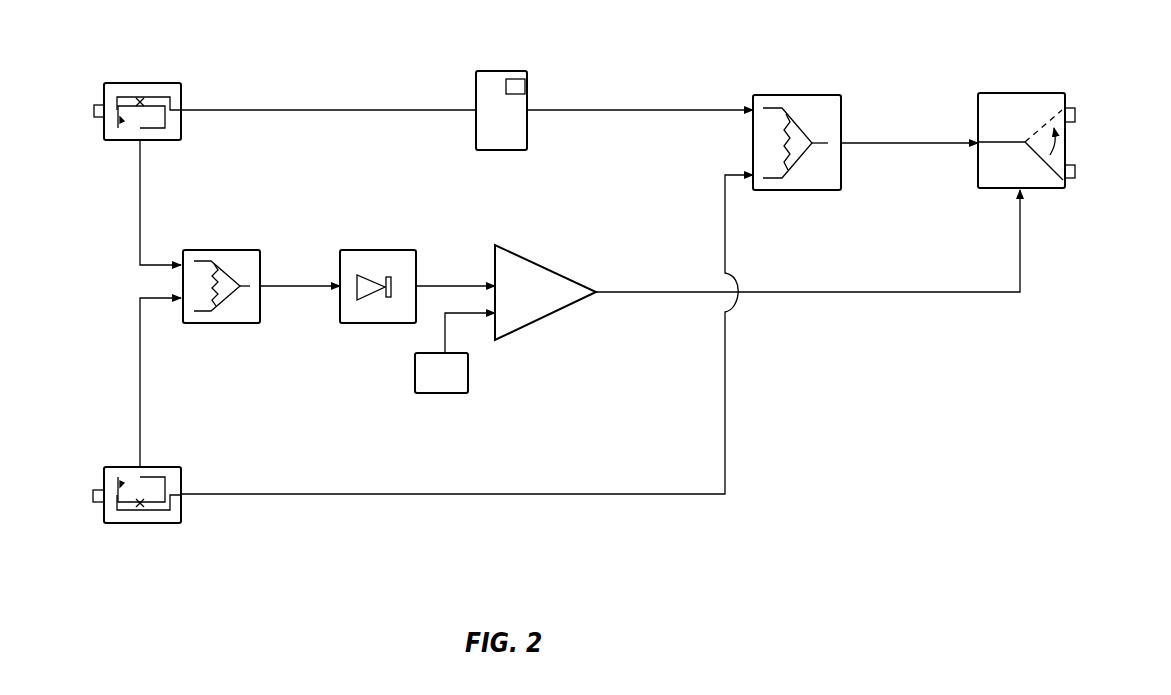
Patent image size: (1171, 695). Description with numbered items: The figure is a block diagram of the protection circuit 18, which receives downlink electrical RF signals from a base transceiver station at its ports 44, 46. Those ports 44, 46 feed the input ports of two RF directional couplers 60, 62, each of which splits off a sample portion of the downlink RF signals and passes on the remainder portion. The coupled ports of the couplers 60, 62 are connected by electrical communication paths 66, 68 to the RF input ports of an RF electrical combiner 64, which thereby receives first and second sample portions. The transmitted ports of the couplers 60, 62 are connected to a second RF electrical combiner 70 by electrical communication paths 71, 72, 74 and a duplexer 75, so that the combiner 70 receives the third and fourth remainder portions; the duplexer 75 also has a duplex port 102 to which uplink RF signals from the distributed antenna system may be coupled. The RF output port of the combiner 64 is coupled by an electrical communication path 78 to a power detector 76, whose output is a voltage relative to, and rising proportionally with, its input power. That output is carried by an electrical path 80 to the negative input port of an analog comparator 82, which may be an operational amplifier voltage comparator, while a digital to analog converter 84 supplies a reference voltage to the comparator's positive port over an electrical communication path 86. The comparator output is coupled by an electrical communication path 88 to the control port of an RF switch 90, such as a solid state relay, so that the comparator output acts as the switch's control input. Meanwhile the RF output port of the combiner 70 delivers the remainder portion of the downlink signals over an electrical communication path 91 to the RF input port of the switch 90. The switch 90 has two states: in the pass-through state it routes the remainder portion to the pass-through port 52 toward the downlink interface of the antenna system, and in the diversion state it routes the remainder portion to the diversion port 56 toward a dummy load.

The protection circuit 18 is at (818, 516).
The port 44 is at (98, 107).
The port 46 is at (97, 502).
The pass-through port 52 is at (1072, 110).
The diversion port 56 is at (1078, 172).
The RF directional coupler 60 is at (172, 83).
The RF directional coupler 62 is at (178, 520).
The RF electrical combiner 64 is at (250, 250).
The electrical communication path 66 is at (140, 237).
The electrical communication path 68 is at (140, 375).
The RF electrical combiner 70 is at (822, 95).
The electrical communication path 71 is at (332, 109).
The electrical communication path 72 is at (640, 109).
The electrical communication path 74 is at (472, 494).
The duplexer 75 is at (498, 71).
The power detector 76 is at (400, 250).
The electrical communication path 78 is at (285, 300).
The electrical path 80 is at (448, 285).
The analog comparator 82 is at (560, 320).
The digital to analog converter 84 is at (470, 378).
The electrical communication path 86 is at (444, 345).
The electrical communication path 88 is at (860, 292).
The RF switch 90 is at (975, 105).
The electrical communication path 91 is at (905, 145).
The duplex port 102 is at (530, 88).